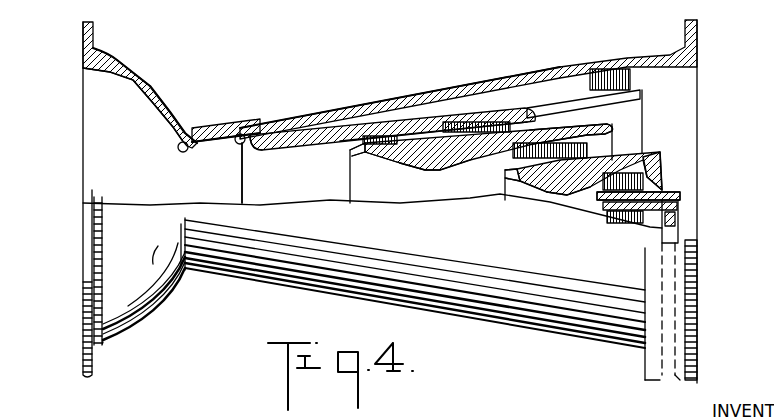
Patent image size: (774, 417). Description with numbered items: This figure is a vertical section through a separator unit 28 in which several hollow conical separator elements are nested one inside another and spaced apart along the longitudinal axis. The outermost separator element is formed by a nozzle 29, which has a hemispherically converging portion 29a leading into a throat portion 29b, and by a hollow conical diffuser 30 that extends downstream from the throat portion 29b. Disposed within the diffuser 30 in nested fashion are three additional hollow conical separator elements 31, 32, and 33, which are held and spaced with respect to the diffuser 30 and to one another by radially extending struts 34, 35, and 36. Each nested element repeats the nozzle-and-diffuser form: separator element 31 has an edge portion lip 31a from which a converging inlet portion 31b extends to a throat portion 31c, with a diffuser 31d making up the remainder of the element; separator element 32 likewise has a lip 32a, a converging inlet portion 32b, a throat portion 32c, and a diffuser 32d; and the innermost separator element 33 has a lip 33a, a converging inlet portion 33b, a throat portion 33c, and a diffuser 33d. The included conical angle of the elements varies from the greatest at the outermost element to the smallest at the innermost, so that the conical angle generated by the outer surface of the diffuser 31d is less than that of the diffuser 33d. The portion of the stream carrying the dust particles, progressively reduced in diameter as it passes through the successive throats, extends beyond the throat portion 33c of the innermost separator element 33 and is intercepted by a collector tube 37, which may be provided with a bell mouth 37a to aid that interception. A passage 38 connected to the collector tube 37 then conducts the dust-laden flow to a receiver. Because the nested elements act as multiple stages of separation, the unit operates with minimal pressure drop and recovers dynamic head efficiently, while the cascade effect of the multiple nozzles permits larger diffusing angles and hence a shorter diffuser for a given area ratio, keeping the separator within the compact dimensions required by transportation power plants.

The separator unit 28 is at (427, 43).
The nozzle 29 is at (74, 136).
The hemispherically converging portion 29a is at (117, 78).
The throat portion 29b is at (192, 130).
The hollow conical diffuser 30 is at (477, 83).
The separator element 31 is at (239, 155).
The edge portion lip 31a is at (243, 128).
The converging inlet portion 31b is at (244, 150).
The throat portion 31c is at (277, 154).
The diffuser 31d is at (347, 143).
The separator element 32 is at (347, 183).
The lip 32a is at (353, 167).
The converging inlet portion 32b is at (392, 160).
The throat portion 32c is at (420, 164).
The diffuser 32d is at (557, 128).
The separator element 33 is at (502, 193).
The lip 33a is at (503, 177).
The converging inlet portion 33b is at (533, 184).
The throat portion 33c is at (553, 188).
The diffuser 33d is at (660, 171).
The radially extending strut 34 is at (290, 120).
The radially extending strut 35 is at (513, 123).
The radially extending strut 36 is at (600, 142).
The collector tube 37 is at (630, 206).
The bell mouth 37a is at (597, 200).
The passage 38 is at (683, 335).